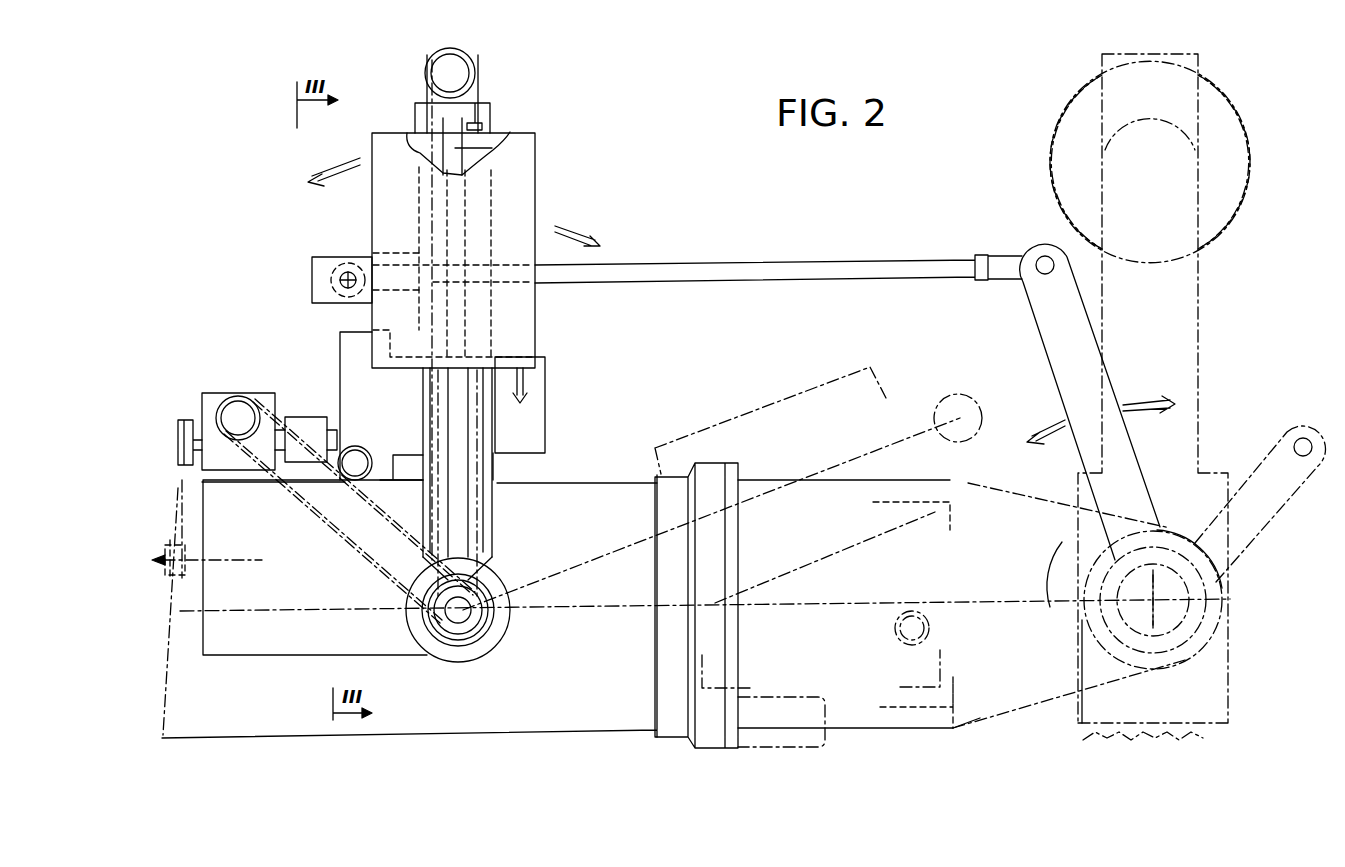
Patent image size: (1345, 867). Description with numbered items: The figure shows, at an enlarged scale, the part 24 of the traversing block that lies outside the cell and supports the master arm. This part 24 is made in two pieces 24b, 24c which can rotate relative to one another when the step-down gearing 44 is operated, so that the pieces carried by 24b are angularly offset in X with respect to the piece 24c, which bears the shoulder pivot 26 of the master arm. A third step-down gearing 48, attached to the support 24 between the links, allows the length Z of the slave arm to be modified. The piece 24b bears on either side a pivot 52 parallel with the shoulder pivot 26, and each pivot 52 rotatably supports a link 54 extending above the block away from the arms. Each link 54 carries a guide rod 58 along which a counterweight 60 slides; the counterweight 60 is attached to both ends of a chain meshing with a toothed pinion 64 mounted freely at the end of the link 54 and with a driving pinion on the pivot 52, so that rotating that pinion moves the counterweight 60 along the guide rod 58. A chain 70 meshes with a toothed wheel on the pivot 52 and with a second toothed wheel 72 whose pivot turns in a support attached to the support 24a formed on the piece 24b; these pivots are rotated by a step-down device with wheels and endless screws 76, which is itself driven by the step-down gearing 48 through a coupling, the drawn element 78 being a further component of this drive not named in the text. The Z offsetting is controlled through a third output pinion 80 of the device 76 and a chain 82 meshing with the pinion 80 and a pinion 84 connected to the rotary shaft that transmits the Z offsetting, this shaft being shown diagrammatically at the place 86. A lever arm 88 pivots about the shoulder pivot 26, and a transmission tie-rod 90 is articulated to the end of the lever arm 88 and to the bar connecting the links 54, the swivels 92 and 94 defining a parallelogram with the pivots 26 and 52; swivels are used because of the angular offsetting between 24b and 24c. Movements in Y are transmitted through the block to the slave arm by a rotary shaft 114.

The part of the traversing block 24 is at (480, 717).
The support 24a is at (230, 642).
The piece of the traversing block part 24b is at (560, 478).
The piece of the traversing block part 24c is at (955, 460).
The shoulder pivot 26 is at (1150, 606).
The step-down gearing 44 is at (777, 700).
The step-down gearing 48 is at (545, 425).
The pivot 52 is at (465, 622).
The link 54 is at (427, 415).
The guide rod 58 is at (510, 132).
The counterweight 60 is at (527, 180).
The toothed pinion 64 is at (466, 66).
The chain 70 is at (297, 510).
The second toothed wheel 72 is at (238, 412).
The step-down device with wheels and endless screws 76 is at (270, 395).
The block 78 is at (310, 418).
The third output pinion 80 is at (185, 420).
The chain 82 is at (183, 520).
The pinion 84 is at (175, 577).
The rotary shaft location 86 is at (242, 560).
The lever arm 88 is at (1058, 378).
The transmission tie-rod 90 is at (862, 268).
The swivel 92 is at (1035, 275).
The swivel 94 is at (345, 270).
The rotary shaft 114 is at (238, 612).